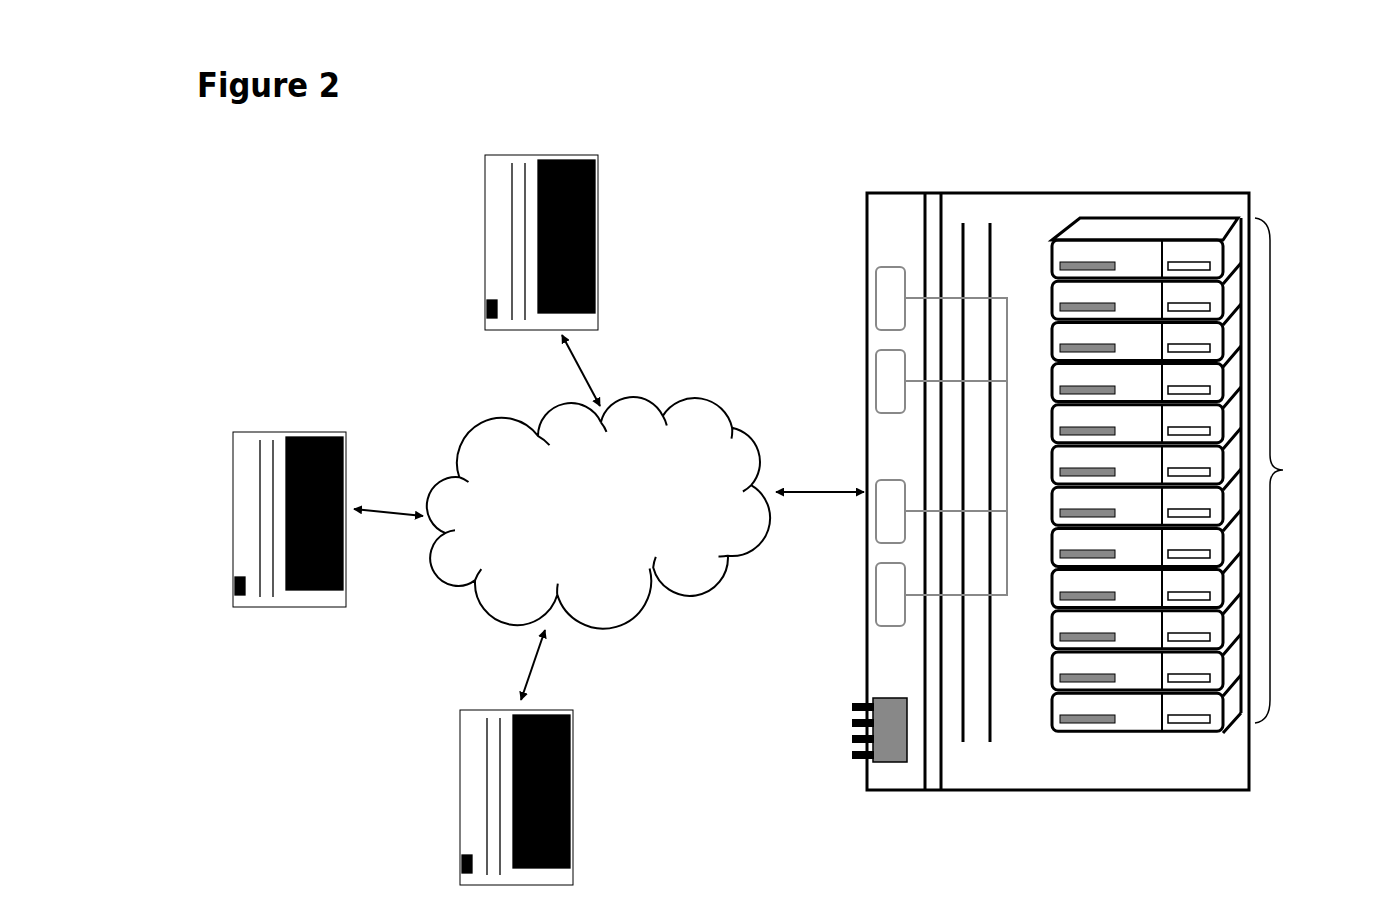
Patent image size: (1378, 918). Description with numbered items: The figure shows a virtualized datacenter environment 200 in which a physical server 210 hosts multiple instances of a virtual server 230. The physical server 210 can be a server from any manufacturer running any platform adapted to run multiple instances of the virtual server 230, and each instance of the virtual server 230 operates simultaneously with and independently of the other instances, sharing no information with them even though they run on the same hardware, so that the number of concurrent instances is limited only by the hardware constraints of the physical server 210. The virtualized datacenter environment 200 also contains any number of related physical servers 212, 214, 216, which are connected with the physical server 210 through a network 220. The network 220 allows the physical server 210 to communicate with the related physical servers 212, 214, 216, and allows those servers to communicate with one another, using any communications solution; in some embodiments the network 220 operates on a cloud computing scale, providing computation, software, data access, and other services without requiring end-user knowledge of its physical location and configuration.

The virtualized datacenter environment 200 is at (1263, 128).
The physical server 210 is at (865, 207).
The related physical server 212 is at (485, 218).
The related physical server 214 is at (278, 432).
The related physical server 216 is at (458, 777).
The network 220 is at (598, 513).
The virtual server 230 is at (1196, 475).